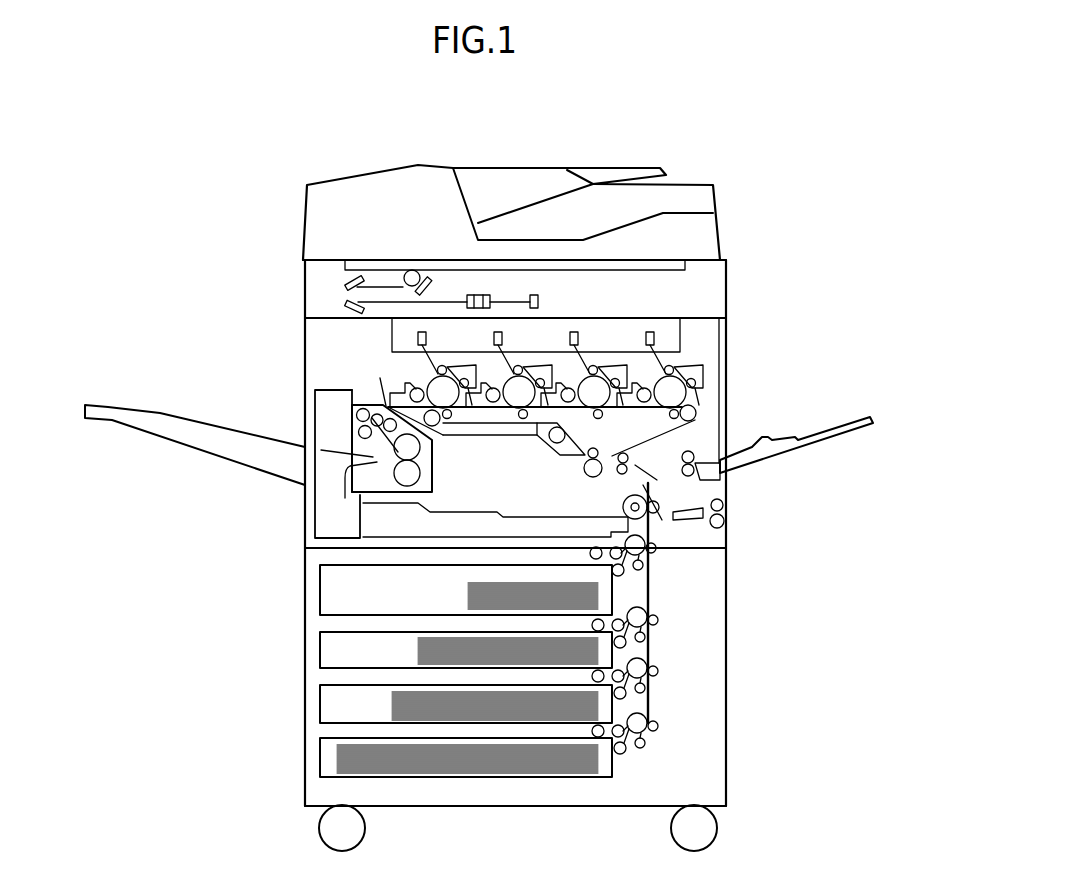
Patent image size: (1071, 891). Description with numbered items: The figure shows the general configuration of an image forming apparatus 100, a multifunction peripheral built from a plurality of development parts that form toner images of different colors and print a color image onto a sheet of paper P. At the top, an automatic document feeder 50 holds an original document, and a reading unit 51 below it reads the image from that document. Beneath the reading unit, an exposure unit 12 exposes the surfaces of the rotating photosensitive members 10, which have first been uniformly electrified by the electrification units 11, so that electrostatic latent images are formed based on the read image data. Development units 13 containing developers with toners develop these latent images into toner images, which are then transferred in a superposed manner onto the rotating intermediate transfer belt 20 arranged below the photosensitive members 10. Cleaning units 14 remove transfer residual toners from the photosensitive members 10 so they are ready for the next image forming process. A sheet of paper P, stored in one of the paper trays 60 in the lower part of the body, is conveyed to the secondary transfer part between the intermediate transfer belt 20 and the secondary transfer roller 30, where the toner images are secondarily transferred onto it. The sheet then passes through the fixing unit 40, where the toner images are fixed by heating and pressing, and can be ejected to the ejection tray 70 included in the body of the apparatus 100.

The image forming apparatus 100 is at (210, 187).
The automatic document feeder 50 is at (700, 235).
The reading unit 51 is at (325, 298).
The exposure unit 12 is at (670, 338).
The electrification unit 11 is at (670, 368).
The cleaning unit 14 is at (703, 378).
The photosensitive member 10 is at (673, 395).
The development unit 13 is at (645, 397).
The secondary transfer roller 30 is at (592, 477).
The intermediate transfer belt 20 is at (650, 443).
The fixing unit 40 is at (383, 405).
The ejection tray 70 is at (190, 418).
The paper tray 60 is at (338, 598).
The sheet of paper P is at (475, 592).